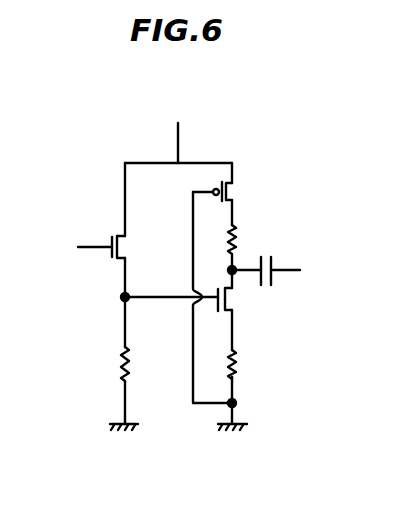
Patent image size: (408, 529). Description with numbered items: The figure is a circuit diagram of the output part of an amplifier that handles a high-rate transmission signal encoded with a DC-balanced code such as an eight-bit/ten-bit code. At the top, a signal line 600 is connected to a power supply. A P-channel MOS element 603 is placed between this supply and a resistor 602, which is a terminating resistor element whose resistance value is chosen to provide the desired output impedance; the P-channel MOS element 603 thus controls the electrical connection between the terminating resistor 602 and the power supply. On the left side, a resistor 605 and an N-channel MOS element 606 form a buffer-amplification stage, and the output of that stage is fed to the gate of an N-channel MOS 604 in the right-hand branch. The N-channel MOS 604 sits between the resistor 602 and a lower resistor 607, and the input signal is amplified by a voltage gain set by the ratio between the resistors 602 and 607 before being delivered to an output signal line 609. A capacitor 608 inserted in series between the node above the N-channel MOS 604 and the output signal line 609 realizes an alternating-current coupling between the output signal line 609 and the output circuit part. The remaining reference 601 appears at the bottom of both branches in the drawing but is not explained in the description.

The signal line 600 is at (185, 133).
The ground 601 is at (124, 437).
The resistor 602 is at (240, 230).
The P-channel MOS element 603 is at (240, 175).
The N-channel MOS 604 is at (240, 308).
The resistor 605 is at (110, 367).
The N-channel MOS element 606 is at (115, 225).
The resistor 607 is at (240, 360).
The capacitor 608 is at (272, 262).
The output signal line 609 is at (298, 278).